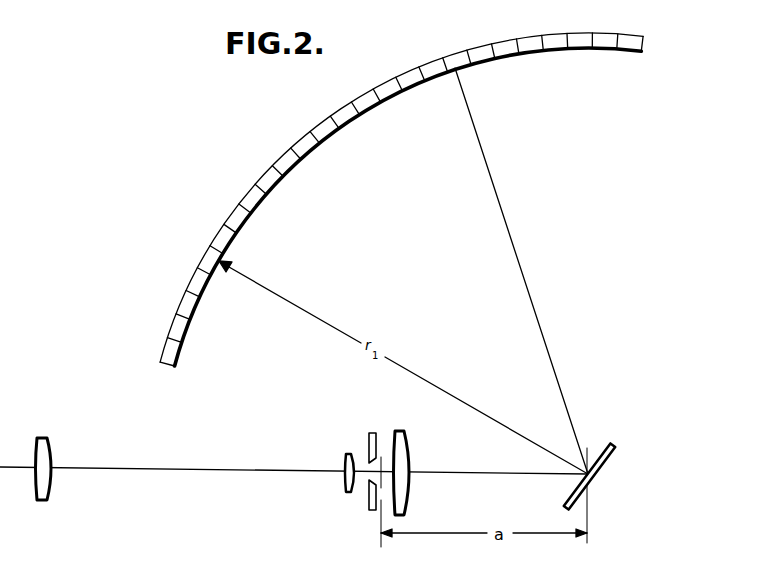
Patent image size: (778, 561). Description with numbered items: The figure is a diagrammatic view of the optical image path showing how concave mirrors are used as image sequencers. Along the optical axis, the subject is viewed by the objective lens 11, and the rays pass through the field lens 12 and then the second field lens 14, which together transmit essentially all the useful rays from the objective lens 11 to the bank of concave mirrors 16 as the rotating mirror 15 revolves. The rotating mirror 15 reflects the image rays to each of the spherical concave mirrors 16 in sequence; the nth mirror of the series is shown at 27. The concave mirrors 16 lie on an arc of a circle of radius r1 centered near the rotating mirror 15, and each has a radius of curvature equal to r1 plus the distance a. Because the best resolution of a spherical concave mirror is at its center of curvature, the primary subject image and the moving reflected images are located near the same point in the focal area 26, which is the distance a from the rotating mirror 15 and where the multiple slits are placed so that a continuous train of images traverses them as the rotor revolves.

The objective lens 11 is at (45, 484).
The field lens 12 is at (345, 463).
The second field lens 14 is at (412, 452).
The rotating mirror 15 is at (608, 457).
The concave mirrors 16 is at (268, 198).
The focal area 26 is at (365, 457).
The nth concave mirror 27 is at (450, 63).